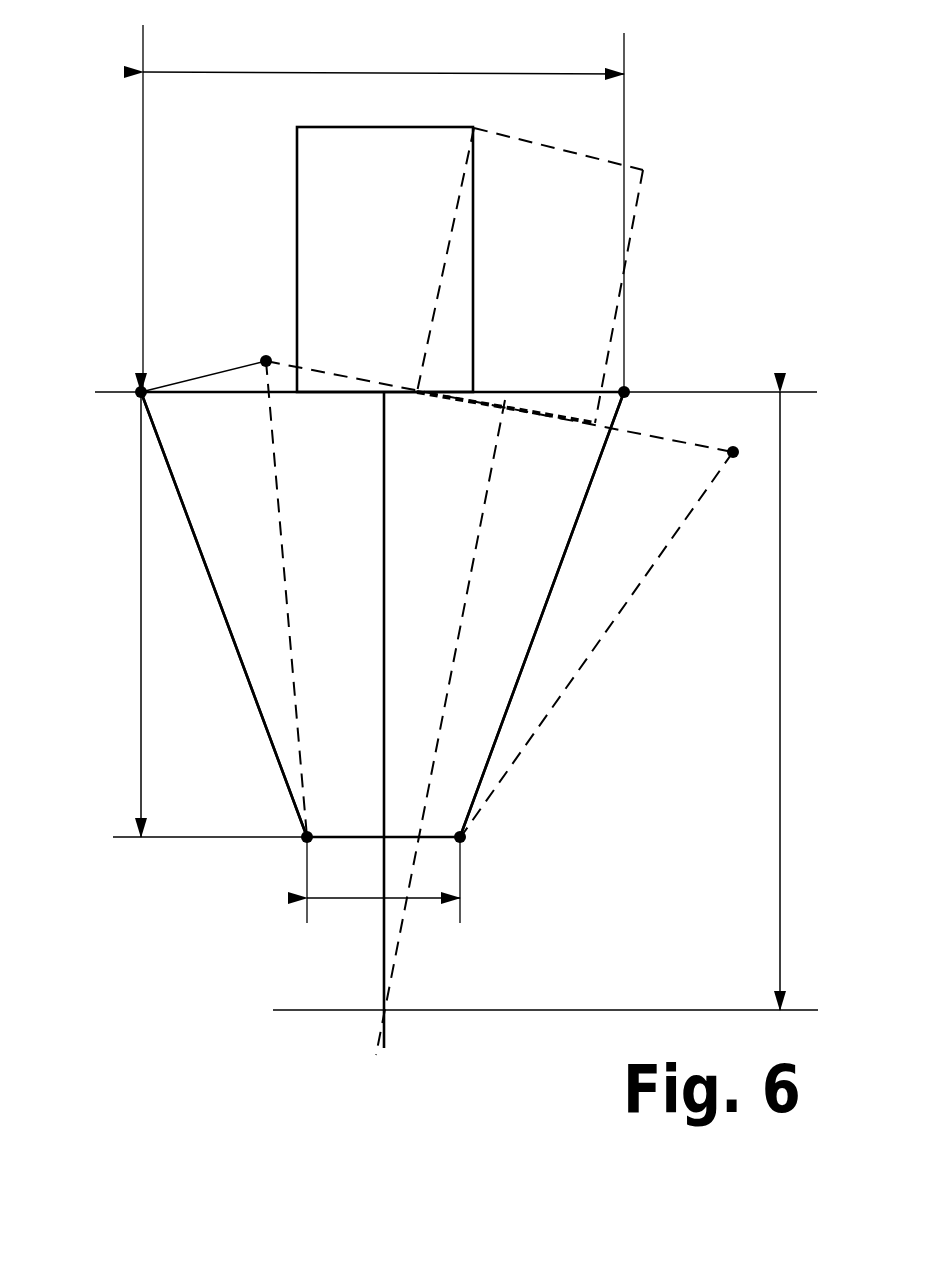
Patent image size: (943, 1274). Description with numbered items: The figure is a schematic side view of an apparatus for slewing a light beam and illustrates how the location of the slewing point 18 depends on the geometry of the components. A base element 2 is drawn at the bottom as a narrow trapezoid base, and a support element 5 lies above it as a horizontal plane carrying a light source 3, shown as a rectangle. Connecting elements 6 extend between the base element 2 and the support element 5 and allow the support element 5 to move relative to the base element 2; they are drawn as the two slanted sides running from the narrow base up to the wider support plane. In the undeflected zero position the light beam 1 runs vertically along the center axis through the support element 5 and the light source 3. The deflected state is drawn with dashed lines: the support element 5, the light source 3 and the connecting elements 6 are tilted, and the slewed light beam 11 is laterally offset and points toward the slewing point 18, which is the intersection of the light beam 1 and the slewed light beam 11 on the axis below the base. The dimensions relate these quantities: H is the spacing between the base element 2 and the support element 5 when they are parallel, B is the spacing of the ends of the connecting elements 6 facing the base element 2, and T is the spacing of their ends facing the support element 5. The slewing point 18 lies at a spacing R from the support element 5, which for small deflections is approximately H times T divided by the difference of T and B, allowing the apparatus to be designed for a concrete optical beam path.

The light beam 1 is at (384, 427).
The base element 2 is at (318, 840).
The light source 3 is at (400, 273).
The support element 5 is at (537, 392).
The connecting elements 6 is at (236, 647).
The slewed light beam 11 is at (503, 412).
The slewing point 18 is at (385, 1010).
The spacing of ends facing toward support element T is at (263, 72).
The spacing between base element and support element H is at (141, 583).
The spacing of ends facing toward base element B is at (350, 900).
The spacing of slewing point from support element R is at (781, 762).